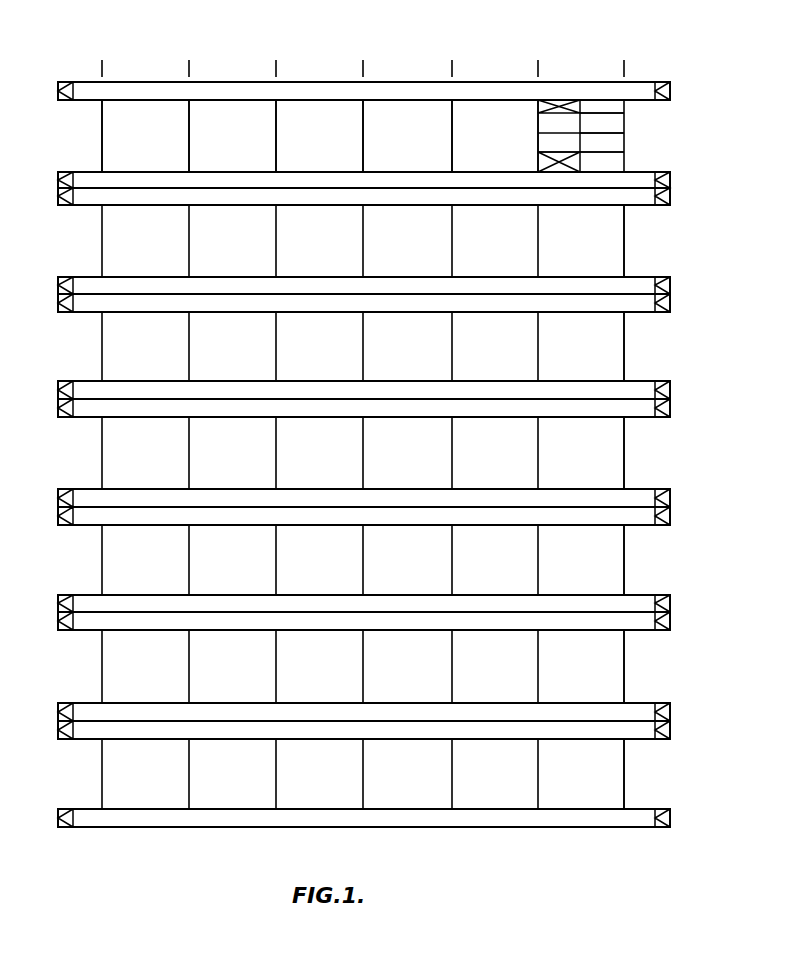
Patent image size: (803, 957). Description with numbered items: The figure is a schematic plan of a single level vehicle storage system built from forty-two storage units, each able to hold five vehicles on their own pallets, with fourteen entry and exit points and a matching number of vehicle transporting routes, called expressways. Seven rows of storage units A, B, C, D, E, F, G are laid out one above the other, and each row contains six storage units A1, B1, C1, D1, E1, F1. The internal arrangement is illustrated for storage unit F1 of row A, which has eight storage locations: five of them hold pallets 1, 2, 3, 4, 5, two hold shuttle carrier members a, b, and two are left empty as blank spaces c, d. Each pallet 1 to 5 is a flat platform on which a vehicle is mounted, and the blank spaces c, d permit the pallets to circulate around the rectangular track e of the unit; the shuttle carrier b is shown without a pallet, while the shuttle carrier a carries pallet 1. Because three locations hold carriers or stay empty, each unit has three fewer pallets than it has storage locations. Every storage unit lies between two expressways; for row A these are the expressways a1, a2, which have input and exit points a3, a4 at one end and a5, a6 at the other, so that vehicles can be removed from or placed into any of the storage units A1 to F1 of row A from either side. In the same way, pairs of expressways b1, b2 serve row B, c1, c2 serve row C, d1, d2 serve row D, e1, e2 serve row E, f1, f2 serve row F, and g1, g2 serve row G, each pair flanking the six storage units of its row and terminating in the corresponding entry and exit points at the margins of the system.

The shuttle carrier member a is at (598, 100).
The expressway a1 is at (395, 92).
The expressway a2 is at (378, 184).
The input and exit point a3 is at (670, 91).
The input and exit point a4 is at (672, 188).
The input and exit point a5 is at (58, 91).
The input and exit point a6 is at (58, 182).
The shuttle carrier member b is at (598, 162).
The expressway b1 is at (505, 202).
The expressway b2 is at (583, 286).
The blank space c is at (540, 104).
The expressway c1 is at (397, 300).
The expressway c2 is at (500, 388).
The blank space d is at (540, 160).
The expressway d1 is at (390, 408).
The expressway d2 is at (505, 496).
The rectangular track e is at (155, 133).
The expressway e1 is at (392, 515).
The expressway e2 is at (505, 601).
The expressway f1 is at (393, 620).
The expressway f2 is at (500, 707).
The expressway g1 is at (393, 730).
The expressway g2 is at (500, 815).
The pallet 1 is at (618, 110).
The pallet 2 is at (616, 129).
The pallet 3 is at (616, 141).
The pallet 4 is at (545, 147).
The pallet 5 is at (545, 122).
The row of storage units A is at (657, 136).
The row of storage units B is at (654, 241).
The row of storage units C is at (654, 346).
The row of storage units D is at (655, 453).
The row of storage units E is at (653, 560).
The row of storage units F is at (653, 666).
The row of storage units G is at (655, 774).
The storage unit A1 is at (132, 425).
The storage unit B1 is at (219, 425).
The storage unit C1 is at (306, 425).
The storage unit D1 is at (395, 425).
The storage unit E1 is at (482, 425).
The storage unit F1 is at (581, 425).